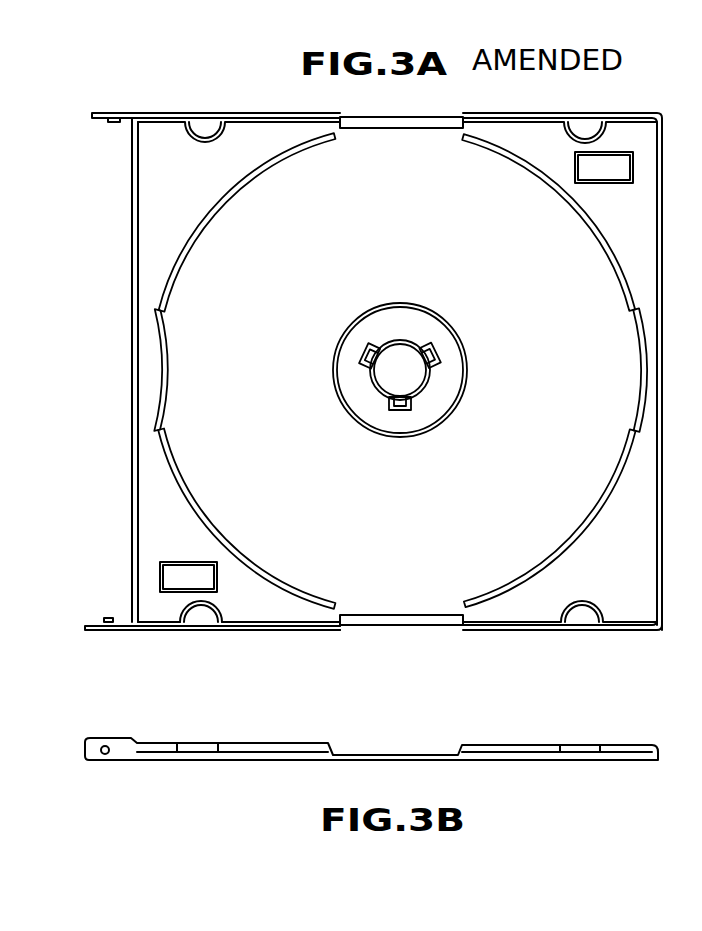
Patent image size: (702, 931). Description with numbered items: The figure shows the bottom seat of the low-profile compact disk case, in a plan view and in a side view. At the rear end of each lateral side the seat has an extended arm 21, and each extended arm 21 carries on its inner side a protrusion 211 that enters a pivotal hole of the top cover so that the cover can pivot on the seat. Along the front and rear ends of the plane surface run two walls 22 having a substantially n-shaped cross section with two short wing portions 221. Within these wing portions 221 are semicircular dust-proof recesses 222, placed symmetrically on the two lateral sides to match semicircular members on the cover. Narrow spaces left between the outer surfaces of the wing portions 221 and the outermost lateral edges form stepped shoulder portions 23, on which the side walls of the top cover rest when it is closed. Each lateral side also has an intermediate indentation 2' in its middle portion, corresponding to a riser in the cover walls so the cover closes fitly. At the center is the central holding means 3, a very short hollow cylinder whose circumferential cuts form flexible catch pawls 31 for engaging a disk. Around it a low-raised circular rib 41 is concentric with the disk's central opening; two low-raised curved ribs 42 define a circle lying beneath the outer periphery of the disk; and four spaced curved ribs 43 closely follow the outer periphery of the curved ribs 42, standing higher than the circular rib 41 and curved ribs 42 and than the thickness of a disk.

The intermediate indentation 2' is at (401, 664).
The extended arm 21 is at (93, 631).
The protrusion 211 is at (100, 620).
The wall 22 is at (238, 621).
The wing portion 221 is at (210, 631).
The semicircular dust-proof recess 222 is at (198, 618).
The stepped shoulder portion 23 is at (287, 632).
The central holding means 3 is at (376, 380).
The flexible catch pawl 31 is at (395, 410).
The circular rib 41 is at (460, 338).
The curved rib 42 is at (467, 630).
The spaced curved rib 43 is at (507, 602).